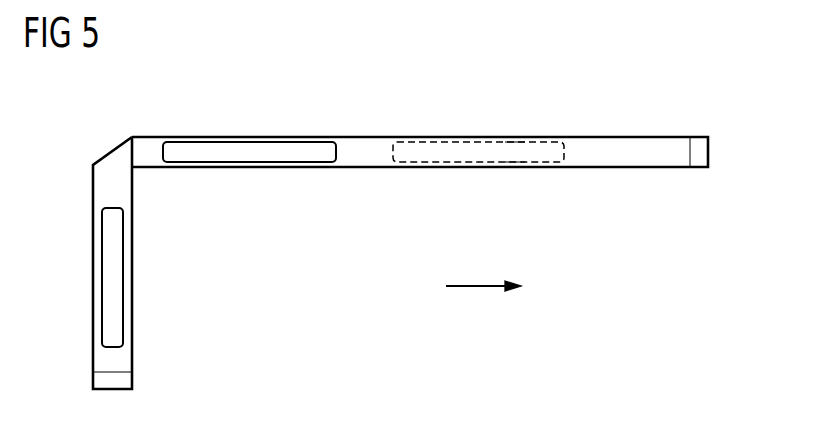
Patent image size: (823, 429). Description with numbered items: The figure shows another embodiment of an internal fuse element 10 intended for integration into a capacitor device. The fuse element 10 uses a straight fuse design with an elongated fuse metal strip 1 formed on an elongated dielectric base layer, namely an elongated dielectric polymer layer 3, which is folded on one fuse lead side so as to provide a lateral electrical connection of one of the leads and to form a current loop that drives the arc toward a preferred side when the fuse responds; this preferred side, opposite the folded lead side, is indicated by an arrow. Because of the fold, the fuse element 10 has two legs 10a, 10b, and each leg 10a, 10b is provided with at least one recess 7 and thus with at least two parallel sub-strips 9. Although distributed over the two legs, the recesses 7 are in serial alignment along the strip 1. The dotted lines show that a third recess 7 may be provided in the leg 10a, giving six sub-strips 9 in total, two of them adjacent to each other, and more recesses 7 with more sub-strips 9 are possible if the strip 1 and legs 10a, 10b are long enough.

The fuse metal strip 1 is at (637, 155).
The dielectric polymer layer 3 is at (127, 358).
The recess 7 is at (222, 150).
The sub-strip 9 is at (294, 140).
The internal fuse element 10 is at (693, 92).
The leg 10a is at (636, 137).
The leg 10b is at (92, 365).